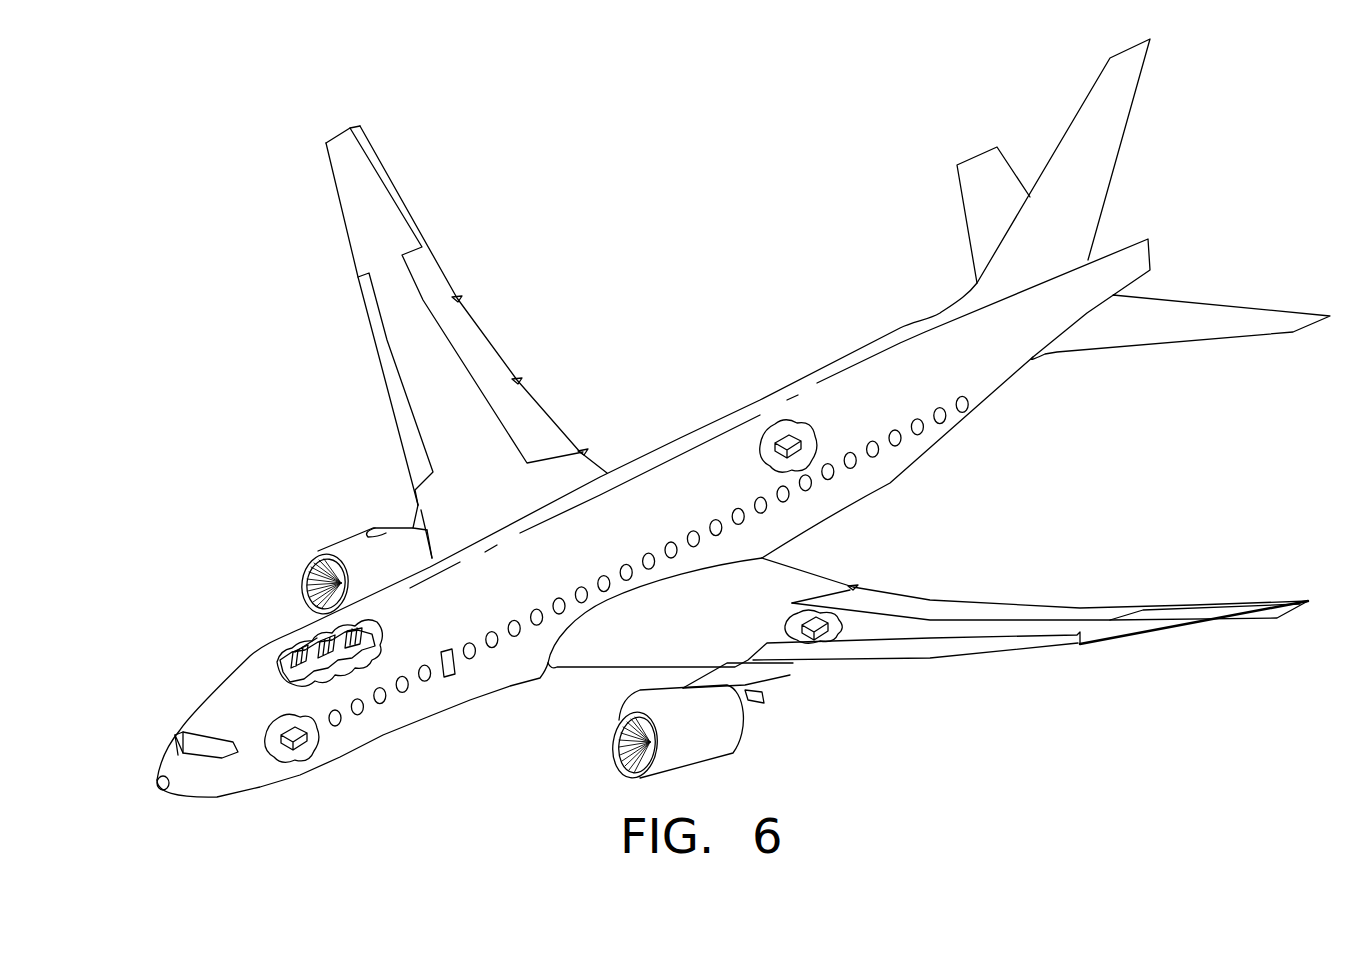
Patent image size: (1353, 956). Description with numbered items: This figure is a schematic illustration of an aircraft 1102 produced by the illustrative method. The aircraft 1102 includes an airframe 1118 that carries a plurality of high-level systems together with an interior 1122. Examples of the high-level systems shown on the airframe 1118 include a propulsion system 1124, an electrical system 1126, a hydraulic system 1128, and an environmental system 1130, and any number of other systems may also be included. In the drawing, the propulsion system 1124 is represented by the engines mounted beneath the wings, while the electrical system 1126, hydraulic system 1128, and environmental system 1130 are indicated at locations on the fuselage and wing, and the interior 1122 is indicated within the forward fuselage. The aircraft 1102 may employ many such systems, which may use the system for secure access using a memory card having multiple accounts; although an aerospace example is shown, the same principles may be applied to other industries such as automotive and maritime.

The aircraft 1102 is at (303, 332).
The airframe 1118 is at (289, 619).
The interior 1122 is at (343, 678).
The propulsion system 1124 is at (343, 547).
The electrical system 1126 is at (290, 731).
The hydraulic system 1128 is at (815, 617).
The environmental system 1130 is at (783, 437).